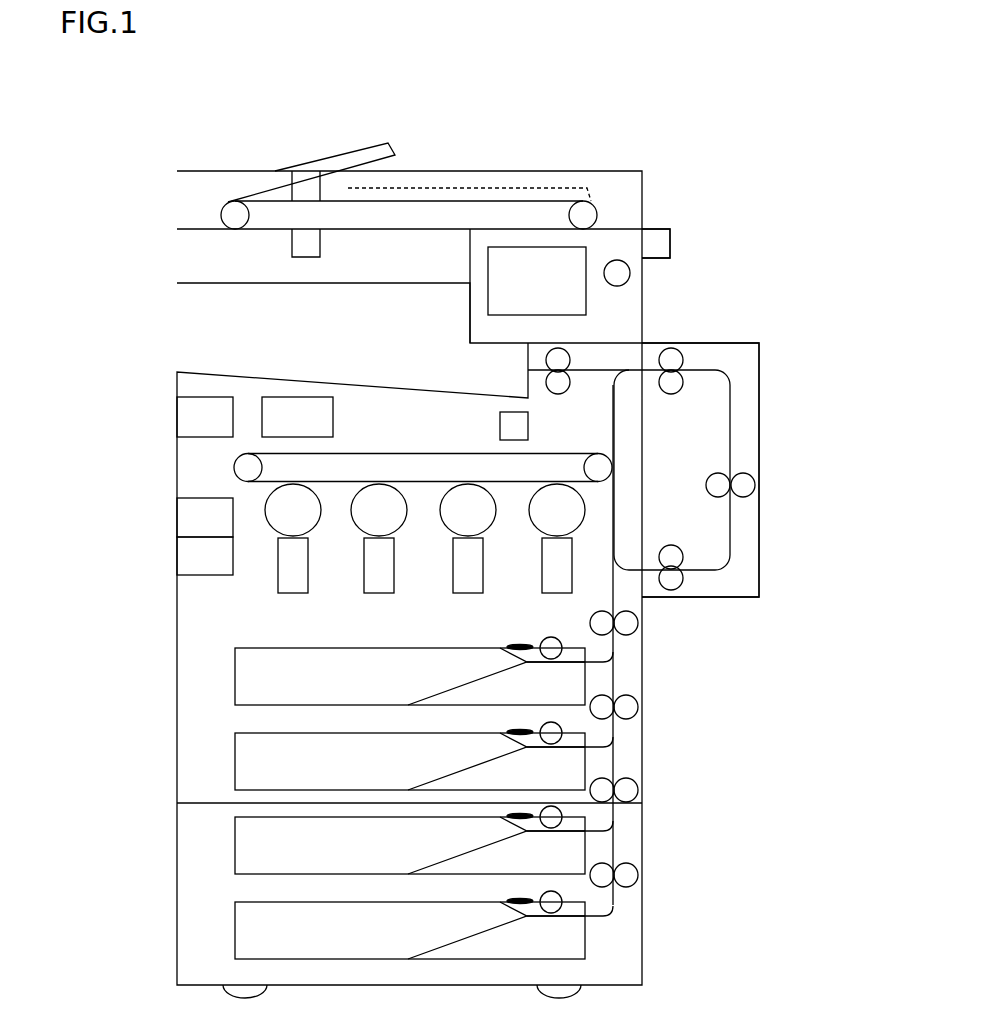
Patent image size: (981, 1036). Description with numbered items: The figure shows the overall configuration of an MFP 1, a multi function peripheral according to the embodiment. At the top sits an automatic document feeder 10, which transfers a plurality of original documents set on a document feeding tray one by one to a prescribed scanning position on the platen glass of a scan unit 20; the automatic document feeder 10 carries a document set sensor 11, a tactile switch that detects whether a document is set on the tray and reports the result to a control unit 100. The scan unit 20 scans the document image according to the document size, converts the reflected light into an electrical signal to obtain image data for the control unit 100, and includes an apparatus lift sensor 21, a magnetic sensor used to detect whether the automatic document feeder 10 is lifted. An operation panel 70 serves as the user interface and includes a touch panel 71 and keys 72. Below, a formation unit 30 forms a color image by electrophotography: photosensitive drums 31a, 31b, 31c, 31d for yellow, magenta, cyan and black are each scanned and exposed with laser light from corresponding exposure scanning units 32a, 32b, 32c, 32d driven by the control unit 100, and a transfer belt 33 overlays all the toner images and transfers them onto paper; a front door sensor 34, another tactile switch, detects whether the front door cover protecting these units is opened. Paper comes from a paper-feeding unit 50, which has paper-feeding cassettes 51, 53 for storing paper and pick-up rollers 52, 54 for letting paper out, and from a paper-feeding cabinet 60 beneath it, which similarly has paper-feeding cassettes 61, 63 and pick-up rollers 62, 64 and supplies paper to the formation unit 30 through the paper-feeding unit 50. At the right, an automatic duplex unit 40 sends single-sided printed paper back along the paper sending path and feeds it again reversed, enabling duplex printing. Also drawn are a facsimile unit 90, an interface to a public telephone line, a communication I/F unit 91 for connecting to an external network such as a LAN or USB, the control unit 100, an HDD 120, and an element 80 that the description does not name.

The MFP 1 is at (191, 64).
The automatic document feeder 10 is at (642, 200).
The document set sensor 11 is at (278, 172).
The scan unit 20 is at (177, 257).
The apparatus lift sensor 21 is at (292, 257).
The formation unit 30 is at (614, 510).
The photosensitive drum 31a is at (293, 510).
The photosensitive drum 31b is at (379, 510).
The photosensitive drum 31c is at (468, 510).
The photosensitive drum 31d is at (557, 510).
The exposure scanning unit 32a is at (292, 582).
The exposure scanning unit 32b is at (379, 582).
The exposure scanning unit 32c is at (468, 582).
The exposure scanning unit 32d is at (557, 582).
The transfer belt 33 is at (235, 468).
The front door sensor 34 is at (500, 428).
The automatic duplex unit 40 is at (759, 400).
The paper-feeding unit 50 is at (475, 699).
The paper-feeding cassette 51 is at (424, 671).
The pick-up roller 52 is at (500, 650).
The paper-feeding cassette 53 is at (424, 756).
The pick-up roller 54 is at (500, 735).
The paper-feeding cabinet 60 is at (475, 882).
The paper-feeding cassette 61 is at (424, 840).
The pick-up roller 62 is at (500, 819).
The paper-feeding cassette 63 is at (424, 925).
The pick-up roller 64 is at (500, 904).
The operation panel 70 is at (526, 281).
The touch panel 71 is at (488, 280).
The keys 72 is at (617, 286).
The discharge tray 80 is at (672, 229).
The facsimile unit 90 is at (205, 517).
The communication I/F unit 91 is at (205, 556).
The control unit 100 is at (205, 417).
The HDD 120 is at (297, 417).